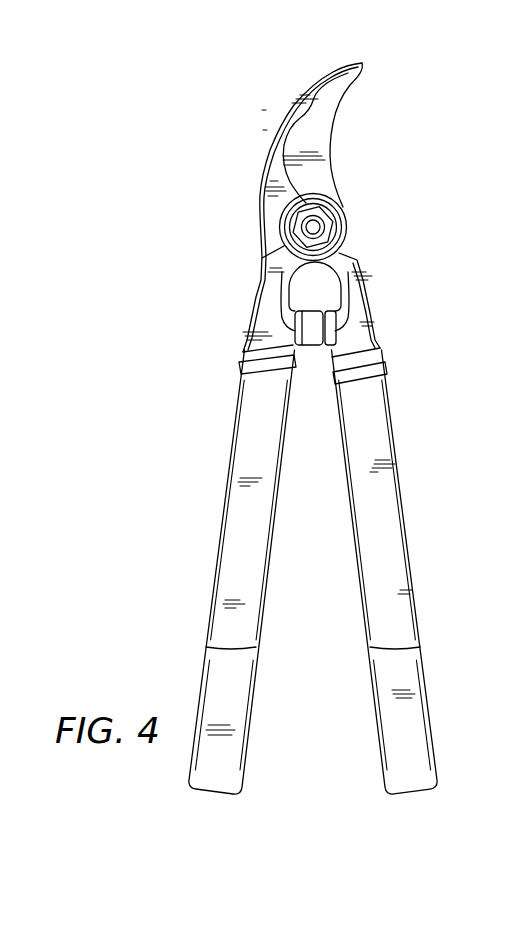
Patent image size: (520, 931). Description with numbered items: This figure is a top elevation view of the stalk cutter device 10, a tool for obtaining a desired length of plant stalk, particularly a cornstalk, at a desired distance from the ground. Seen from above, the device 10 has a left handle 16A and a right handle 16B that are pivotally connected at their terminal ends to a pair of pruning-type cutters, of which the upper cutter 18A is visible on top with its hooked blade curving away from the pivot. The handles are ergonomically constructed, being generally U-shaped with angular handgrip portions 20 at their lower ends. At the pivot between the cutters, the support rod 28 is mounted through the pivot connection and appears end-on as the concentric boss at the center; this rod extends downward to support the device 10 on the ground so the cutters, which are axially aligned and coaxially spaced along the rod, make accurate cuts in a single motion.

The stalk cutter device 10 is at (165, 160).
The upper cutter 18A is at (315, 127).
The support rod 28 is at (320, 227).
The left handle 16A is at (238, 510).
The right handle 16B is at (390, 510).
The handgrip portions 20 is at (215, 700).